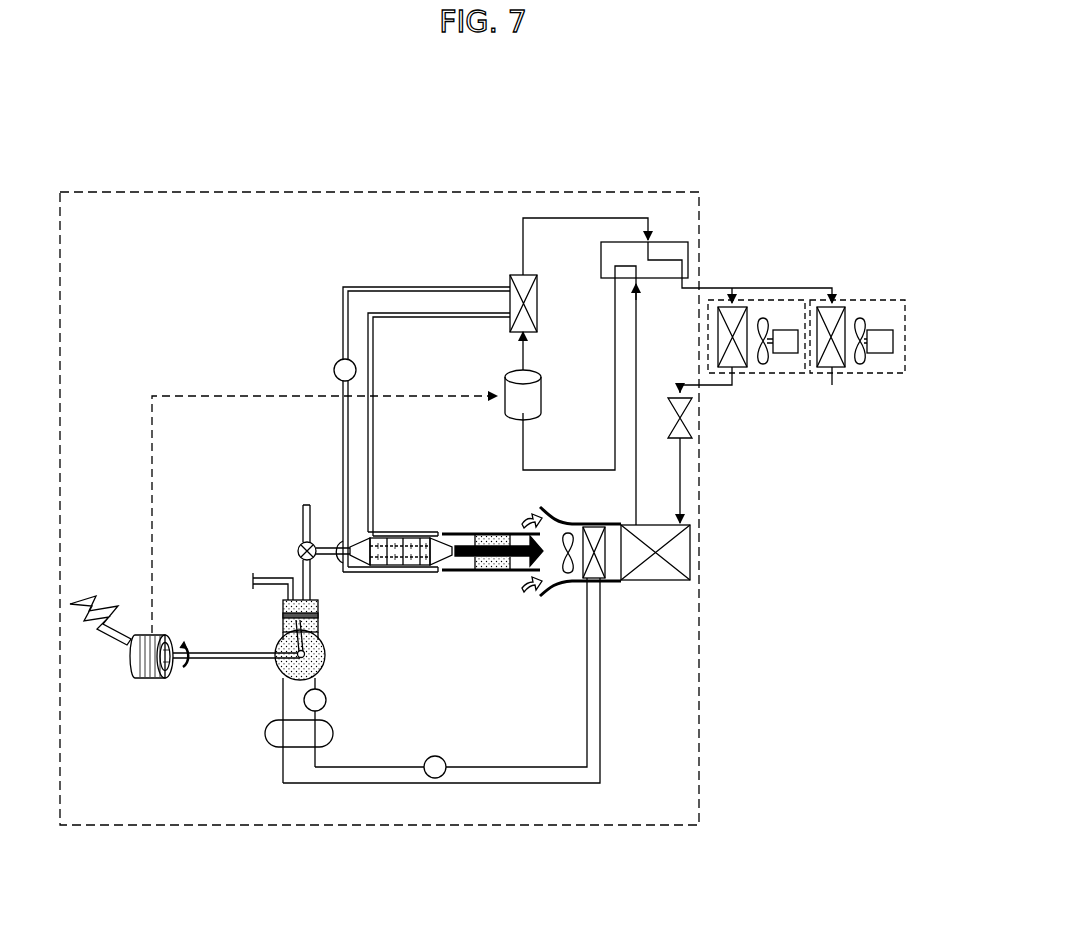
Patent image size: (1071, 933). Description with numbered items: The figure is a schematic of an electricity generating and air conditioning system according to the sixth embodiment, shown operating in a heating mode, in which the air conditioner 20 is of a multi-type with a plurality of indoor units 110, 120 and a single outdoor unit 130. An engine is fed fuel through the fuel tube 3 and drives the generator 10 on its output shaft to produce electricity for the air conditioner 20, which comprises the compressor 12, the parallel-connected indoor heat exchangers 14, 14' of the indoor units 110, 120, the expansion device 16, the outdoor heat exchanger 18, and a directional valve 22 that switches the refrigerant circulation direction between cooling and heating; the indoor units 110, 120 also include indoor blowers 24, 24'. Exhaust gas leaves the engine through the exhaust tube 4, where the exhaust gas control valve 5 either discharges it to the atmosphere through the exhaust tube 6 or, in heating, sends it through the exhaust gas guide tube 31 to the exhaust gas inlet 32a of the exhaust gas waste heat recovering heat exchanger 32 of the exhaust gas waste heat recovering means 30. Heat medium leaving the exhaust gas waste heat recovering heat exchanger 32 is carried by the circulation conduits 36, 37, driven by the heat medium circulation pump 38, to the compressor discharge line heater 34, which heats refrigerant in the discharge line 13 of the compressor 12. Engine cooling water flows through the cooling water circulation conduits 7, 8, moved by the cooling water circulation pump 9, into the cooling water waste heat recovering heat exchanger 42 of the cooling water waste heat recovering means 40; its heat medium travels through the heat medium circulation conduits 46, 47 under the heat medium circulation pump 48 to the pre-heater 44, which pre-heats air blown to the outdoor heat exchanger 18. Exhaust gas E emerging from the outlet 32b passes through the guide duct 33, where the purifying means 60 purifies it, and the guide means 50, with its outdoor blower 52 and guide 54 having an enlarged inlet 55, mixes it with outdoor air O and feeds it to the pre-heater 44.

The fuel tube 3 is at (265, 578).
The exhaust tube 4 is at (302, 568).
The exhaust gas control valve 5 is at (298, 549).
The exhaust tube 6 is at (304, 508).
The cooling water circulation conduit 7 is at (301, 691).
The cooling water circulation conduit 8 is at (313, 680).
The cooling water circulation pump 9 is at (327, 700).
The generator 10 is at (142, 680).
The compressor 12 is at (541, 398).
The discharge line 13 is at (527, 337).
The indoor heat exchanger 14 is at (727, 300).
The indoor heat exchanger 14' is at (826, 300).
The expansion device 16 is at (693, 420).
The outdoor heat exchanger 18 is at (692, 535).
The air conditioner 20 is at (719, 318).
The directional valve 22 is at (688, 243).
The indoor blower 24 is at (787, 364).
The indoor blower 24' is at (885, 358).
The exhaust gas waste heat recovering means 30 is at (447, 389).
The exhaust gas guide tube 31 is at (330, 548).
The exhaust gas waste heat recovering heat exchanger 32 is at (400, 566).
The exhaust gas inlet 32a is at (357, 568).
The outlet 32b is at (440, 566).
The guide duct 33 is at (435, 548).
The compressor discharge line heater 34 is at (508, 300).
The circulation conduit 36 is at (343, 330).
The circulation conduit 37 is at (410, 318).
The heat medium circulation pump 38 is at (334, 370).
The cooling water waste heat recovering means 40 is at (479, 701).
The cooling water waste heat recovering heat exchanger 42 is at (262, 742).
The pre-heater 44 is at (595, 528).
The heat medium circulation conduit 46 is at (548, 767).
The heat medium circulation conduit 47 is at (556, 785).
The heat medium circulation pump 48 is at (440, 757).
The guide means 50 is at (577, 573).
The outdoor blower 52 is at (568, 533).
The guide 54 is at (576, 585).
The enlarged inlet 55 is at (548, 511).
The purifying means 60 is at (492, 563).
The exhaust gas E is at (490, 571).
The outdoor air O is at (511, 533).
The indoor unit 110 is at (762, 304).
The indoor unit 120 is at (860, 299).
The outdoor unit 130 is at (385, 826).